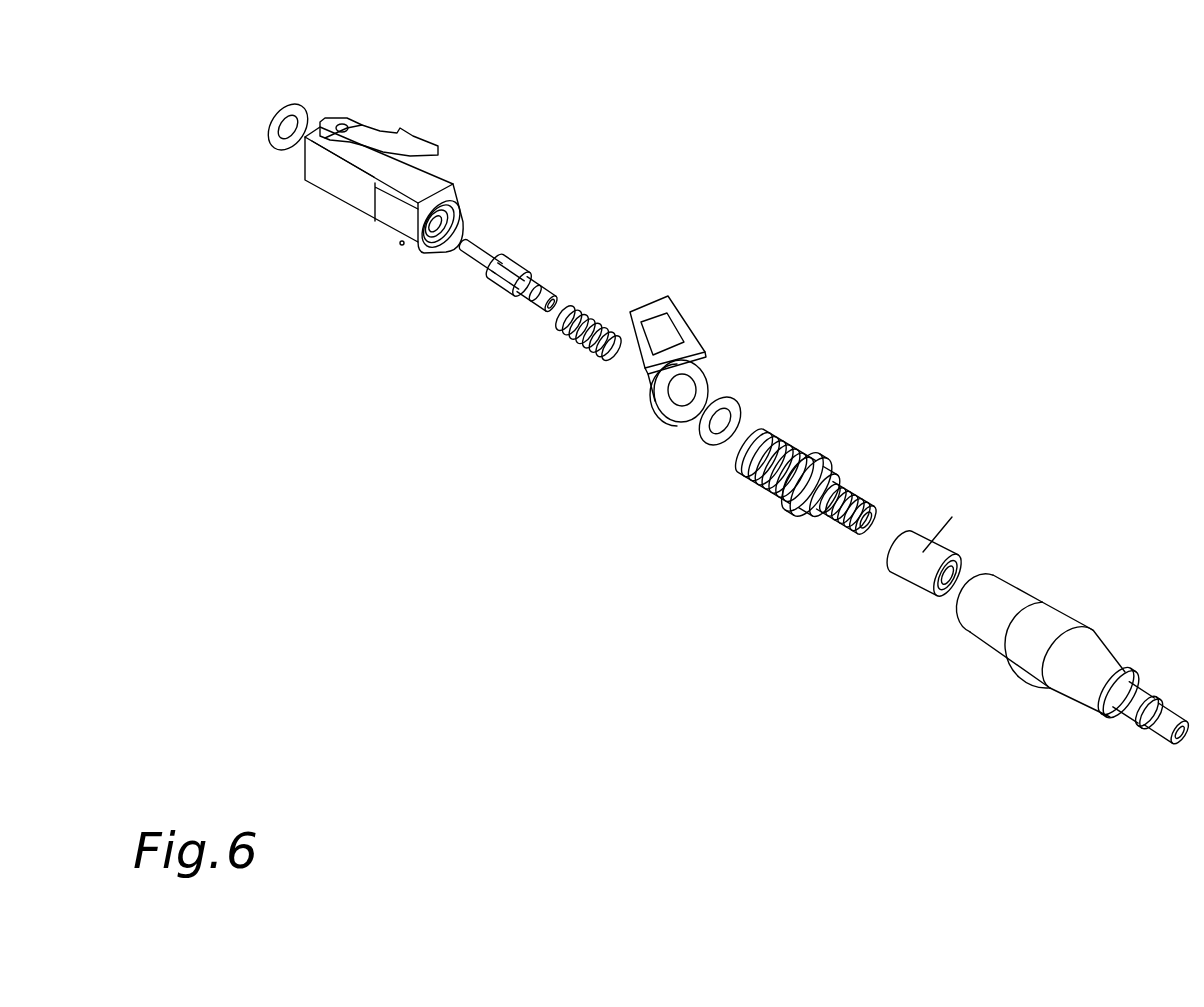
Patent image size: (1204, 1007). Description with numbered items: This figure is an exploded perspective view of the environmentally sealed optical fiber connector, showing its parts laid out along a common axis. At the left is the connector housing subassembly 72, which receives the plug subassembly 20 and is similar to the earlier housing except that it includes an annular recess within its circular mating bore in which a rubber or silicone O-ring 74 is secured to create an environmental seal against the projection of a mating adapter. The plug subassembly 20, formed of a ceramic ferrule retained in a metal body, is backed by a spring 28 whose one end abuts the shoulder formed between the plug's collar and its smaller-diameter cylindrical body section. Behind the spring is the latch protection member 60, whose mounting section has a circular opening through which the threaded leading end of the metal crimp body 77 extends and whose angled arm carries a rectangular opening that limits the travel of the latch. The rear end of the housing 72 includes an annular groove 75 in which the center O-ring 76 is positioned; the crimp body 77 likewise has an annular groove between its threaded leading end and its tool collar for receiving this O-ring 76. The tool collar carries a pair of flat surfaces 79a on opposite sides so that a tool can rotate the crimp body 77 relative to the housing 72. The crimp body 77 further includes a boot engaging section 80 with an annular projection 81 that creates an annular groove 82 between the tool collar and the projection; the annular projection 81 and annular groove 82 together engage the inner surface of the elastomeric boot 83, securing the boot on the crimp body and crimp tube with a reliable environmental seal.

The plug subassembly 20 is at (525, 250).
The spring 28 is at (566, 336).
The latch protection member 60 is at (687, 310).
The connector housing subassembly 72 is at (340, 197).
The O-ring 74 is at (283, 97).
The annular groove 75 is at (473, 227).
The O-ring 76 is at (733, 402).
The metal crimp body 77 is at (807, 486).
The flat surfaces 79a is at (774, 488).
The boot engaging section 80 is at (830, 450).
The annular projection 81 is at (800, 505).
The annular groove 82 is at (779, 490).
The elastomeric boot 83 is at (1053, 620).